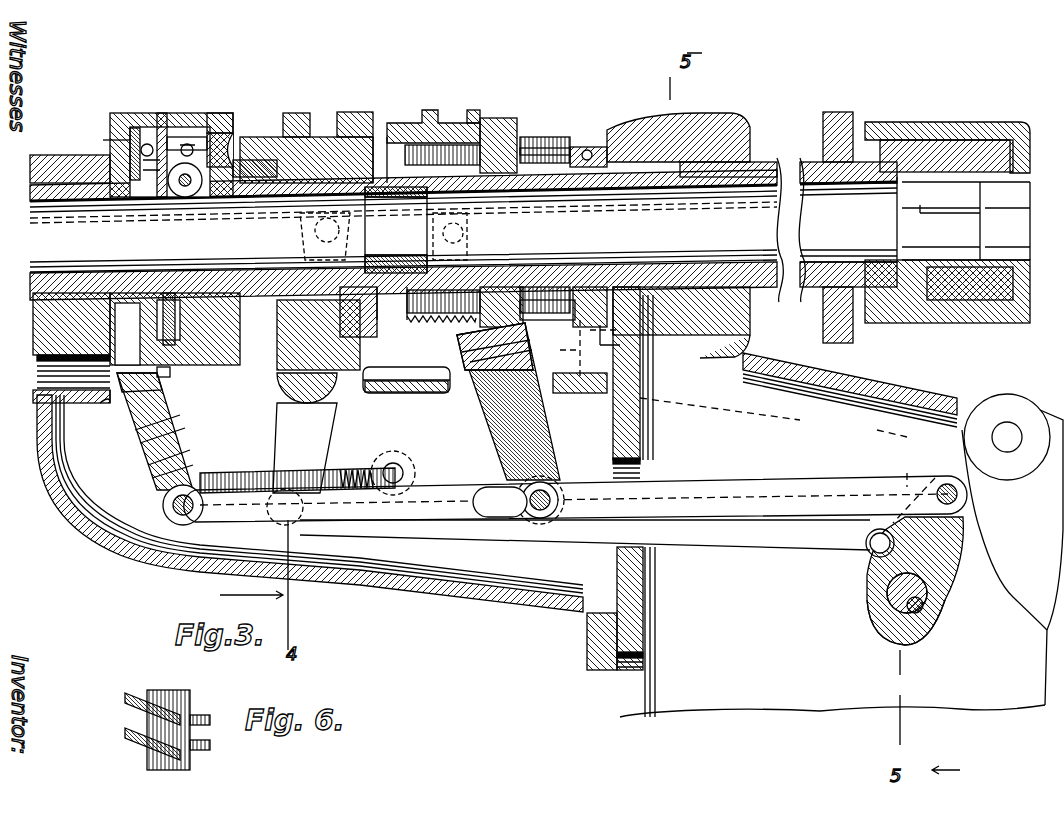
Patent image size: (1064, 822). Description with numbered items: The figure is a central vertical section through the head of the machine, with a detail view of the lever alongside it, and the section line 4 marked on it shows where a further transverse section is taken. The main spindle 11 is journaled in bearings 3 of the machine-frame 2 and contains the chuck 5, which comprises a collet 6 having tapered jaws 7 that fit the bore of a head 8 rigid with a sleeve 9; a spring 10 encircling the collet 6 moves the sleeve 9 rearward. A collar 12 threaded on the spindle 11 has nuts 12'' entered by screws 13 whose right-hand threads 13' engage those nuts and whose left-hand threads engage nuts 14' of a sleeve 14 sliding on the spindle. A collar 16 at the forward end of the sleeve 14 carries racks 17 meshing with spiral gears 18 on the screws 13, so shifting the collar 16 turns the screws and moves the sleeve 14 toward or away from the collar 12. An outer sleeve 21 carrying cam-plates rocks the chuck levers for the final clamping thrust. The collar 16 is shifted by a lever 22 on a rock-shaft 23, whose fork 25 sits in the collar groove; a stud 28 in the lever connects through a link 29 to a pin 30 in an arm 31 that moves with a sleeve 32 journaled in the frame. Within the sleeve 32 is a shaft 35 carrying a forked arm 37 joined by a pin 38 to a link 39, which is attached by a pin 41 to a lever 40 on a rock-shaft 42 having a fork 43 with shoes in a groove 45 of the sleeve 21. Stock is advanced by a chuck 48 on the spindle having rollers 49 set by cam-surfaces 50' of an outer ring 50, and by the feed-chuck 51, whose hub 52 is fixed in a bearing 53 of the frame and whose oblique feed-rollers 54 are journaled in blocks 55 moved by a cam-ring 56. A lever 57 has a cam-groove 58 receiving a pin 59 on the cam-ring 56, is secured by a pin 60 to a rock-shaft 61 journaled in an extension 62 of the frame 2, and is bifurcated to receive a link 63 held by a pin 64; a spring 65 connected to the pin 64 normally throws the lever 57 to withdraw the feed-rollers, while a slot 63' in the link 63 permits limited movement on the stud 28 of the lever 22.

In FIG. 3, the machine-frame 2 is at (655, 683).
In FIG. 3, the bearings 3 is at (680, 127).
In FIG. 3, the section line 4 is at (322, 157).
In FIG. 3, the chuck 5 is at (947, 198).
In FIG. 3, the collet 6 is at (963, 220).
In FIG. 3, the jaws 7 is at (1003, 140).
In FIG. 3, the head 8 is at (953, 150).
In FIG. 3, the sleeve 9 is at (808, 173).
In FIG. 3, the spring 10 is at (953, 300).
In FIG. 3, the main spindle 11 is at (753, 163).
In FIG. 3, the collar 12 is at (561, 273).
In FIG. 3, the nuts 12'' is at (555, 121).
In FIG. 3, the screws 13 is at (590, 207).
In FIG. 3, the right-hand threads 13' is at (606, 227).
In FIG. 3, the sleeve 14 is at (383, 186).
In FIG. 3, the nuts 14' is at (433, 107).
In FIG. 3, the collar 16 is at (487, 120).
In FIG. 3, the racks 17 is at (507, 137).
In FIG. 3, the spiral gears 18 is at (522, 140).
In FIG. 3, the sleeve 21 is at (293, 113).
In FIG. 3, the lever 22 is at (490, 445).
In FIG. 3, the rock-shaft 23 is at (470, 390).
In FIG. 3, the fork 25 is at (466, 235).
In FIG. 3, the stud 28 is at (540, 520).
In FIG. 3, the link 29 is at (575, 499).
In FIG. 3, the pin 30 is at (940, 485).
In FIG. 3, the arm 31 is at (950, 530).
In FIG. 3, the sleeve 32 is at (945, 608).
In FIG. 3, the shaft 35 is at (870, 613).
In FIG. 3, the forked arm 37 is at (877, 565).
In FIG. 3, the pin 38 is at (870, 553).
In FIG. 3, the link 39 is at (585, 536).
In FIG. 3, the lever 40 is at (305, 448).
In FIG. 3, the pin 41 is at (292, 520).
In FIG. 3, the rock-shaft 42 is at (287, 393).
In FIG. 3, the fork 43 is at (294, 254).
In FIG. 3, the groove 45 is at (336, 112).
In FIG. 3, the chuck 48 is at (213, 113).
In FIG. 3, the rollers 49 is at (232, 140).
In FIG. 3, the outer ring 50 is at (168, 126).
In FIG. 3, the cam-surfaces 50' is at (197, 102).
In FIG. 3, the feed-chuck 51 is at (128, 115).
In FIG. 3, the hub 52 is at (77, 213).
In FIG. 3, the bearing 53 is at (62, 157).
In FIG. 3, the feed-rollers 54 is at (152, 200).
In FIG. 3, the blocks 55 is at (106, 141).
In FIG. 3, the cam-ring 56 is at (148, 127).
In FIG. 3, the lever 57 is at (137, 430).
In FIG. 6, the lever 57 is at (190, 712).
In FIG. 3, the cam-groove 58 is at (127, 387).
In FIG. 6, the cam-groove 58 is at (130, 722).
In FIG. 3, the pin 59 is at (170, 373).
In FIG. 3, the pin 60 is at (143, 447).
In FIG. 3, the rock-shaft 61 is at (193, 445).
In FIG. 3, the extension 62 is at (393, 590).
In FIG. 3, the link 63 is at (297, 507).
In FIG. 3, the slot 63' is at (496, 530).
In FIG. 3, the pin 64 is at (163, 505).
In FIG. 3, the spring 65 is at (352, 468).